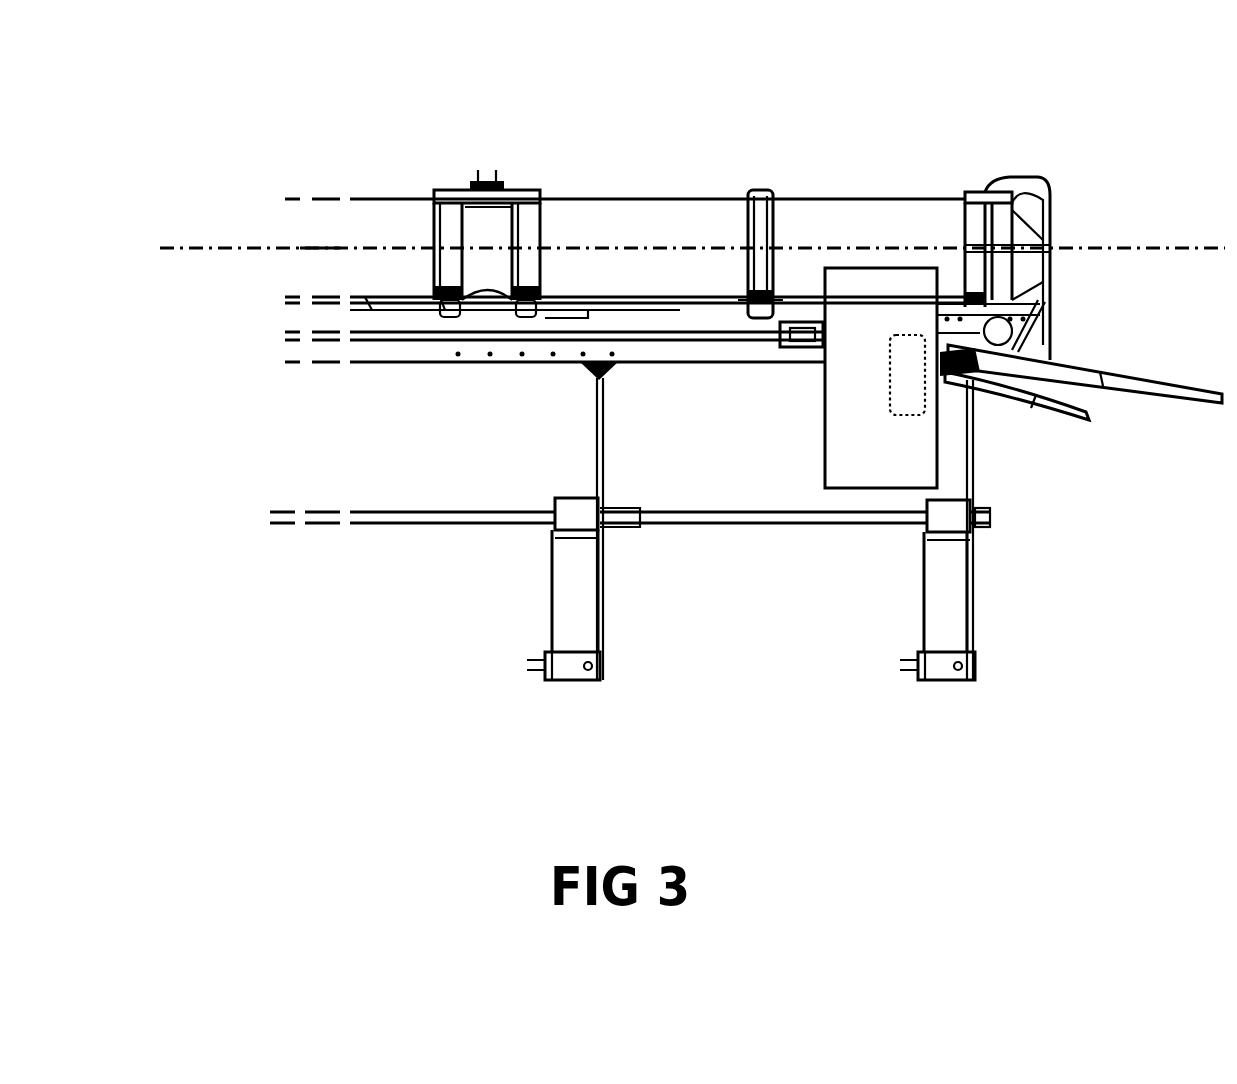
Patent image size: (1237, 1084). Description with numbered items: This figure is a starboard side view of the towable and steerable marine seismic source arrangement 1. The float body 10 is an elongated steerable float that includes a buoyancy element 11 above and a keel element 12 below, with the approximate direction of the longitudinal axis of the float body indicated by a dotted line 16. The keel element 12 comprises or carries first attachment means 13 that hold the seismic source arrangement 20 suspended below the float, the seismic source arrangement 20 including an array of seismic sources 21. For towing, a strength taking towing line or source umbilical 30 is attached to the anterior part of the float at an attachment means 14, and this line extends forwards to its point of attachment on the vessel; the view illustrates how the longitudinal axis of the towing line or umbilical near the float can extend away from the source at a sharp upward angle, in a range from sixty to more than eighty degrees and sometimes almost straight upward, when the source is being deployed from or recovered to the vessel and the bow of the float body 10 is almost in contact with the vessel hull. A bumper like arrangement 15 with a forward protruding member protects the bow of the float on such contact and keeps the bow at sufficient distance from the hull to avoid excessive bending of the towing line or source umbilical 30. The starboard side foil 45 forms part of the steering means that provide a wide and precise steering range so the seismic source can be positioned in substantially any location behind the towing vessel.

The apparatus 1 is at (1098, 152).
The float body 10 is at (632, 197).
The buoyancy element 11 is at (397, 248).
The keel element 12 is at (402, 345).
The first attachment means 13 is at (590, 378).
The attachment means 14 is at (955, 370).
The bumper like arrangement 15 is at (1080, 423).
The longitudinal axis of the float body 16 is at (698, 223).
The seismic source arrangement 20 is at (542, 528).
The seismic source 21 is at (572, 665).
The strength taking towing line or source umbilical 30 is at (1158, 378).
The starboard side foil 45 is at (877, 447).